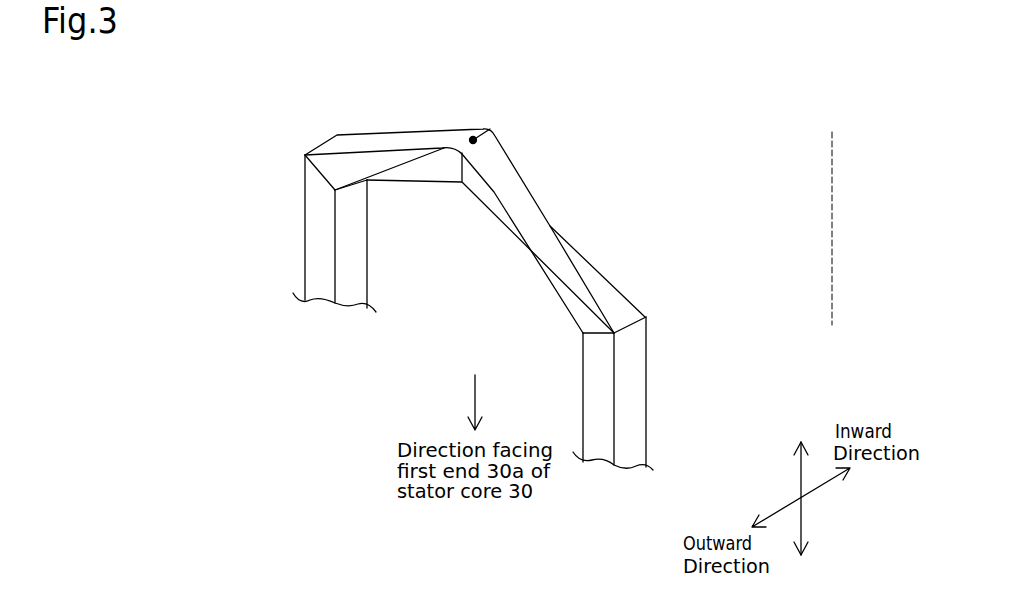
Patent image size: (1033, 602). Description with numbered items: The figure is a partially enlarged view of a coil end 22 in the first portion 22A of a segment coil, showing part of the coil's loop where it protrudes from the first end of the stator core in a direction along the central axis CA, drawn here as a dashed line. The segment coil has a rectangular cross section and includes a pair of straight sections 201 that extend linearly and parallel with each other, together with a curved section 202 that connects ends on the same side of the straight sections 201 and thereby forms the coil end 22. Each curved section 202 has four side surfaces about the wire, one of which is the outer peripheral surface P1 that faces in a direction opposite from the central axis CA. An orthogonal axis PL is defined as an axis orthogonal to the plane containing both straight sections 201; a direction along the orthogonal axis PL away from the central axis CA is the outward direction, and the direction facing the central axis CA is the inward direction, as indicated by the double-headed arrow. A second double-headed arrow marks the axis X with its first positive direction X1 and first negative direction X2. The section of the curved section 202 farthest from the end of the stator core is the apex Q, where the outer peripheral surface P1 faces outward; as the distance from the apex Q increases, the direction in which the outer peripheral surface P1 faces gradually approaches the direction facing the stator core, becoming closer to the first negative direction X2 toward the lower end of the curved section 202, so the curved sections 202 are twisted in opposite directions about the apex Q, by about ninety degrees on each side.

The coil end 22 is at (260, 96).
The first portion 22A is at (475, 253).
The straight section 201 is at (305, 243).
The curved section 202 is at (400, 132).
The outer peripheral surface P1 is at (444, 173).
The apex Q is at (474, 136).
The central axis CA is at (832, 212).
The first direction axis X is at (798, 475).
The first positive direction X1 is at (799, 433).
The first negative direction X2 is at (799, 565).
The orthogonal axis PL is at (815, 488).